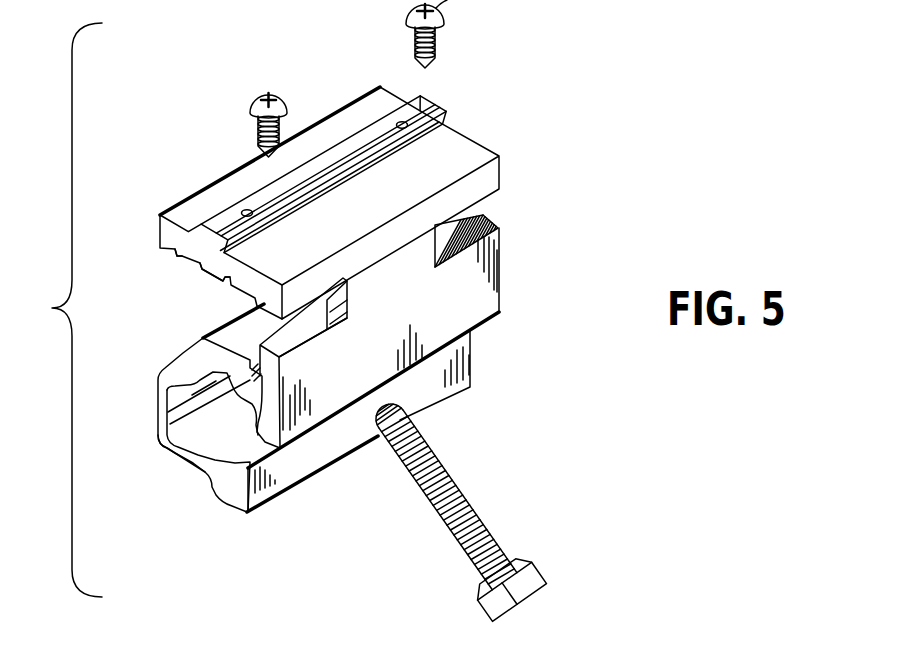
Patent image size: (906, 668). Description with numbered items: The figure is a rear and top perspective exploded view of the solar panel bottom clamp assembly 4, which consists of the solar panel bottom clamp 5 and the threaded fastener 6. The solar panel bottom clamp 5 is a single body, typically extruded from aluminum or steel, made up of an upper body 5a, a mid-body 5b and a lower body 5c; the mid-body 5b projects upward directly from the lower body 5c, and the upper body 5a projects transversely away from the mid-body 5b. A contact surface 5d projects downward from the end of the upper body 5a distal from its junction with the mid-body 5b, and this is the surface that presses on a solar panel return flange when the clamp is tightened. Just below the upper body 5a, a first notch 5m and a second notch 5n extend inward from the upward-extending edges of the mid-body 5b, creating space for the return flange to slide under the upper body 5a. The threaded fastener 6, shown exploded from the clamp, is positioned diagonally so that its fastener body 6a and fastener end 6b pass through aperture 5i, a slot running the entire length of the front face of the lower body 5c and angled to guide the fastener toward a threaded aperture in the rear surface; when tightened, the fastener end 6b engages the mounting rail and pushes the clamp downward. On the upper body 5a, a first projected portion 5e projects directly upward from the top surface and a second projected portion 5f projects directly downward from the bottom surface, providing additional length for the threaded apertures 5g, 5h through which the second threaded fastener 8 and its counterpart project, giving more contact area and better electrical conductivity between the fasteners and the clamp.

The solar panel bottom clamp assembly 4 is at (325, 310).
The solar panel bottom clamp 5 is at (507, 260).
The upper body 5a is at (484, 143).
The mid-body 5b is at (504, 297).
The lower body 5c is at (176, 463).
The contact surface 5d is at (178, 252).
The first projected portion 5e is at (366, 124).
The second projected portion 5f is at (212, 278).
The threaded aperture 5g is at (405, 120).
The threaded aperture 5h is at (247, 210).
The aperture 5i is at (258, 450).
The first notch 5m is at (455, 236).
The second notch 5n is at (338, 298).
The threaded fastener 6 is at (522, 545).
The fastener body 6a is at (474, 503).
The fastener end 6b is at (404, 404).
The second threaded fastener 8 is at (262, 97).